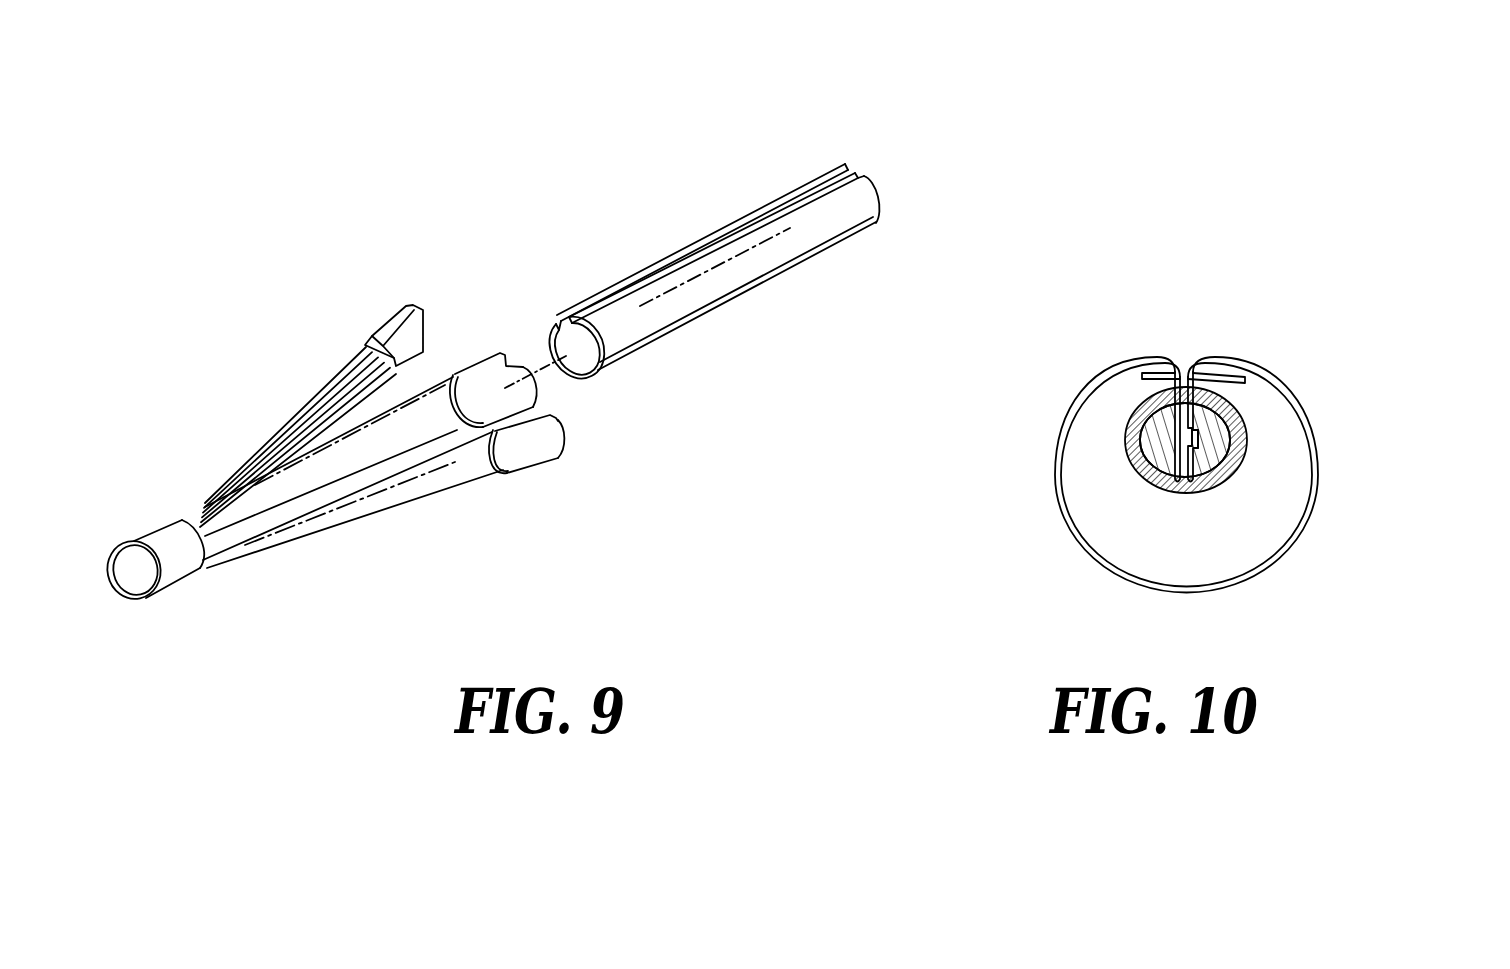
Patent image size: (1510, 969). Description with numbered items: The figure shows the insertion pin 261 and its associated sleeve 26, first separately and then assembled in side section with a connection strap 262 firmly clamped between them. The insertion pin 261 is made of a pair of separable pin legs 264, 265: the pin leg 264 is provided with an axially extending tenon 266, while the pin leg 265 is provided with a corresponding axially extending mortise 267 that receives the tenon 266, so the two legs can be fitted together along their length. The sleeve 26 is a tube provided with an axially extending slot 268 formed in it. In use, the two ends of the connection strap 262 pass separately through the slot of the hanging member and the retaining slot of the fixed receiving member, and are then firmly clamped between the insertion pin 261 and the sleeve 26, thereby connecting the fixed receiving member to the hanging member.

In FIG. 9, the sleeve 26 is at (866, 203).
In FIG. 10, the sleeve 26 is at (1248, 424).
In FIG. 9, the insertion pin 261 is at (215, 568).
In FIG. 10, the insertion pin 261 is at (1126, 433).
In FIG. 10, the connection strap 262 is at (1318, 485).
In FIG. 9, the pin leg 264 is at (417, 328).
In FIG. 10, the pin leg 264 is at (1155, 487).
In FIG. 9, the pin leg 265 is at (558, 444).
In FIG. 10, the pin leg 265 is at (1233, 473).
In FIG. 9, the tenon 266 is at (407, 372).
In FIG. 10, the tenon 266 is at (1128, 455).
In FIG. 10, the mortise 267 is at (1247, 440).
In FIG. 9, the slot 268 is at (857, 168).